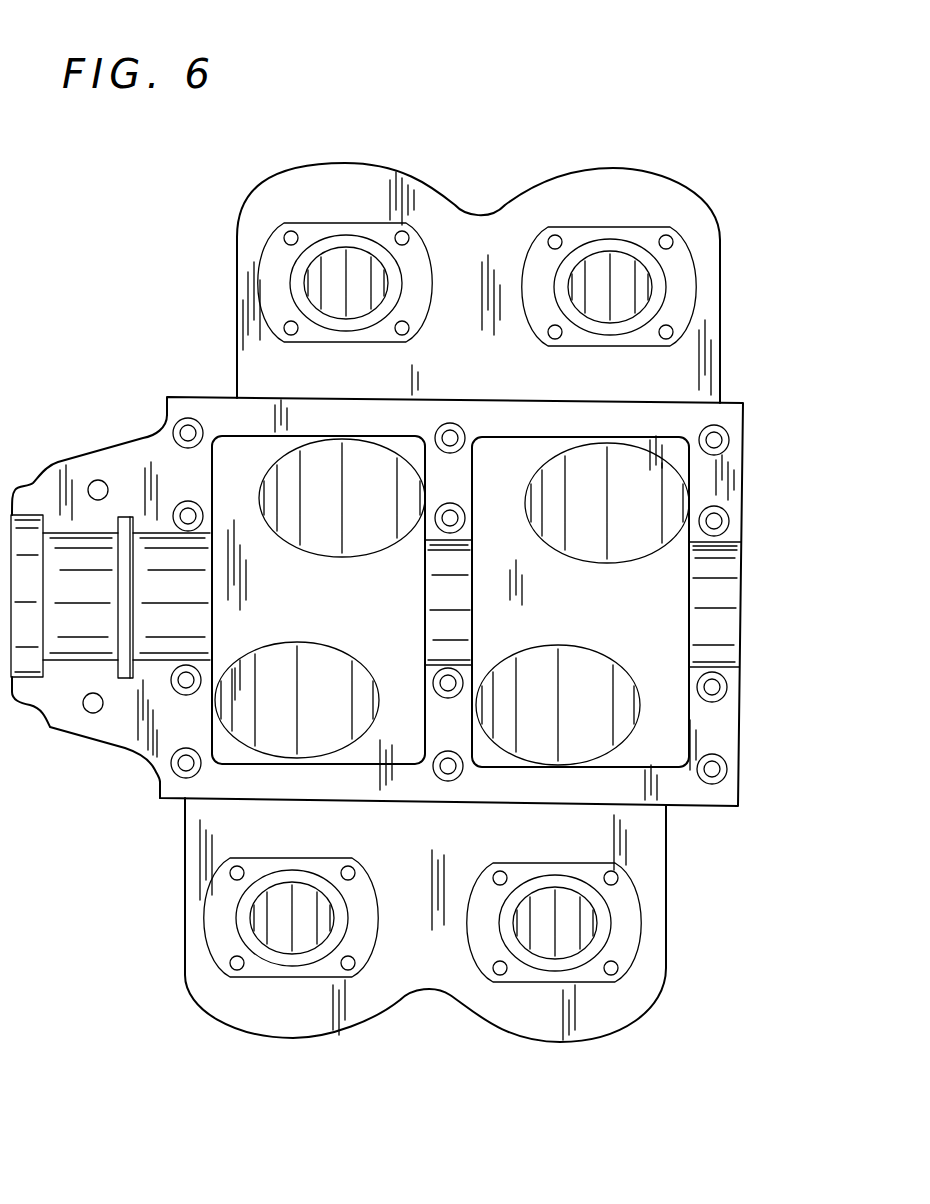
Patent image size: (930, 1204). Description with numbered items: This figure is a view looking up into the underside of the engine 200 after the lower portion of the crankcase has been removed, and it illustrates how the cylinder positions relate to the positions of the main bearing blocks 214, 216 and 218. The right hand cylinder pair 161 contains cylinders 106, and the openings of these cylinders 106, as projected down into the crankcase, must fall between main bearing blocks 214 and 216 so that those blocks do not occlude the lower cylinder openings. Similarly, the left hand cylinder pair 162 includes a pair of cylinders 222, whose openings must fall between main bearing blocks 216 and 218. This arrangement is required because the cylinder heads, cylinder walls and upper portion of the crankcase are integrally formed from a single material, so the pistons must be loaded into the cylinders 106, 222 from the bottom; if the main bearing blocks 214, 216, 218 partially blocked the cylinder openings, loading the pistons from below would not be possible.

The gear housing assembly 200 is at (150, 824).
The left hand cylinder pair 162 is at (340, 152).
The right hand cylinder pair 161 is at (603, 155).
The main bearing block 218 is at (213, 482).
The cylinders 222 is at (390, 538).
The main bearing block 216 is at (473, 623).
The cylinders 106 is at (632, 553).
The main bearing block 214 is at (743, 573).